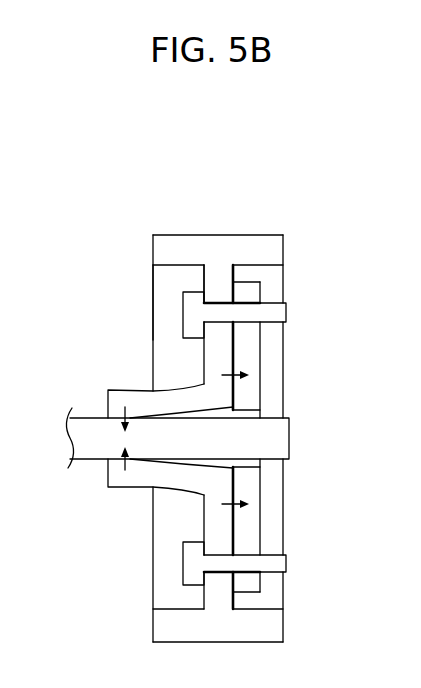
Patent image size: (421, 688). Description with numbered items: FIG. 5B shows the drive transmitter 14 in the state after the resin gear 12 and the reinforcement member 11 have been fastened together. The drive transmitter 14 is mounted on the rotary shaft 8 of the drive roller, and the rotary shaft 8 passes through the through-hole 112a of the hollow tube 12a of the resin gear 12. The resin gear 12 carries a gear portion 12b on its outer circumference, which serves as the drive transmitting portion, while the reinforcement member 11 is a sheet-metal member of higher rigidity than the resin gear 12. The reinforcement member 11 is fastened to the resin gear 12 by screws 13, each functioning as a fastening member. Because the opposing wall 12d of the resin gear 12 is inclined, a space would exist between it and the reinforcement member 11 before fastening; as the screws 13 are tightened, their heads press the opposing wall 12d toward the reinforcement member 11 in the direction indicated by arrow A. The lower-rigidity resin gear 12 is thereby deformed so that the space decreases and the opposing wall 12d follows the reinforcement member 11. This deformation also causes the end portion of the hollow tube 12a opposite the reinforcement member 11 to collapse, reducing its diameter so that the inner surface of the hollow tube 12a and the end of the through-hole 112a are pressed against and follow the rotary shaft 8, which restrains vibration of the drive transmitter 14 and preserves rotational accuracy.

The drive transmitter 14 is at (311, 215).
The resin gear 12 is at (122, 303).
The hollow tube 12a is at (132, 390).
The gear portion 12b is at (245, 240).
The opposing wall 12d is at (204, 283).
The through-hole 112a is at (160, 424).
The reinforcement member 11 is at (262, 393).
The screws 13 is at (287, 313).
The rotary shaft 8 is at (290, 446).
The arrow A is at (236, 372).